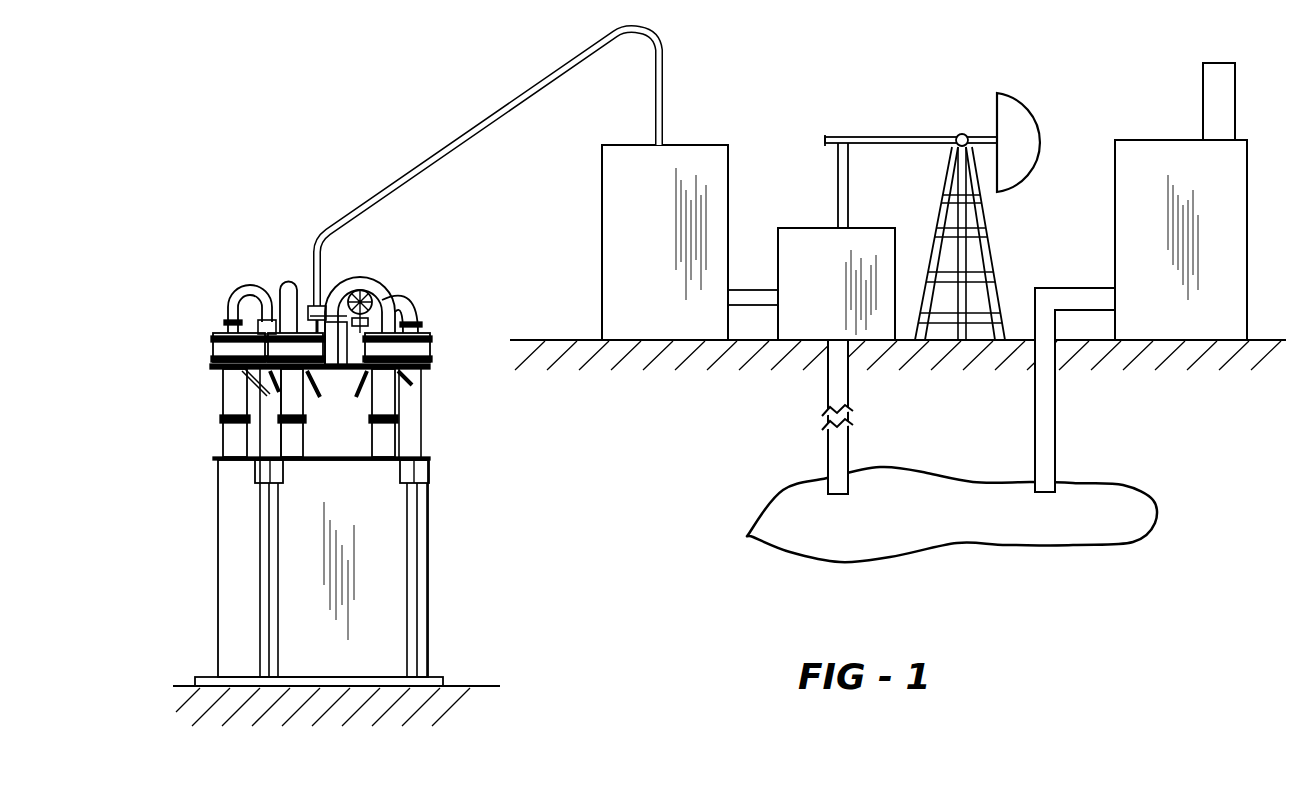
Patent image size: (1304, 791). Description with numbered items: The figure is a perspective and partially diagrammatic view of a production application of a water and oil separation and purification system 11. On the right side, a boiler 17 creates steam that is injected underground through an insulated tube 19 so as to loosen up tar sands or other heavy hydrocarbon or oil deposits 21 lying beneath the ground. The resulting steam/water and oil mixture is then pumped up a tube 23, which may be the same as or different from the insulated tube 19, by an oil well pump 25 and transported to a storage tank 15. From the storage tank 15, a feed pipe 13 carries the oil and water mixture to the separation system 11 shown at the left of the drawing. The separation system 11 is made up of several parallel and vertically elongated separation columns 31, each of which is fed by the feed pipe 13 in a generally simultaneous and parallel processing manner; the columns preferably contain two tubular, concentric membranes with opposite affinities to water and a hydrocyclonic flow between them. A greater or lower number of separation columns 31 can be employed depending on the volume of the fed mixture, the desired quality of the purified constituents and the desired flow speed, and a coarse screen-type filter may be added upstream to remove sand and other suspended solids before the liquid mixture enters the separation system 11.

The water and oil separation and purification system 11 is at (336, 454).
The feed pipe 13 is at (462, 149).
The storage tank 15 is at (660, 226).
The boiler 17 is at (1159, 226).
The insulated tube 19 is at (1047, 455).
The heavy hydrocarbon or oil deposits 21 is at (949, 522).
The tube 23 is at (837, 460).
The oil well pump 25 is at (1030, 113).
The separation columns 31 is at (232, 400).